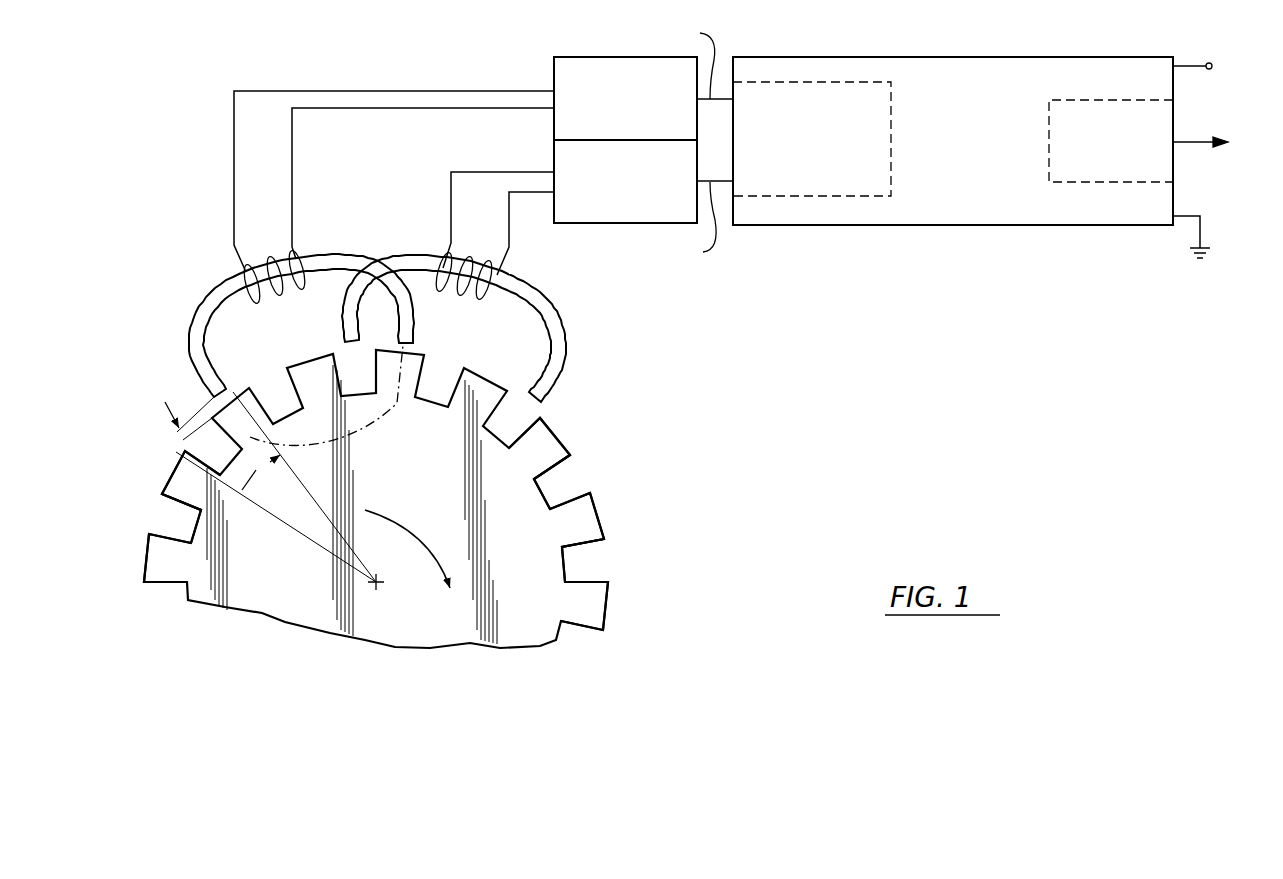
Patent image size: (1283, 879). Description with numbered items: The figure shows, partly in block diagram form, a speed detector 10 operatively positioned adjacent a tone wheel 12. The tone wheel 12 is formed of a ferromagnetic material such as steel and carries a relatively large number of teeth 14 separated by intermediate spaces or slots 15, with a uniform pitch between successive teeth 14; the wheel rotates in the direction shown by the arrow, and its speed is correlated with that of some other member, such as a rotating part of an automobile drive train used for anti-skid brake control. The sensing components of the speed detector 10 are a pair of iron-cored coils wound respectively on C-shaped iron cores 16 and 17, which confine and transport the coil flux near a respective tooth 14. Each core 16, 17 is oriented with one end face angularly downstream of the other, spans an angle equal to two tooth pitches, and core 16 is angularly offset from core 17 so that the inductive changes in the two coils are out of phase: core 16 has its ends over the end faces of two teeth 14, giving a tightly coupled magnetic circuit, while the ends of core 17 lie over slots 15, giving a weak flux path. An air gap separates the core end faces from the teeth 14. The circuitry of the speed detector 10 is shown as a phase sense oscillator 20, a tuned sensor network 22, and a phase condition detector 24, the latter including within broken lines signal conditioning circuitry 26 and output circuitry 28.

The speed detector 10 is at (895, 398).
The tone wheel 12 is at (275, 618).
The teeth 14 is at (176, 471).
The slots 15 is at (168, 517).
The iron core 16 is at (326, 262).
The iron core 17 is at (543, 303).
The phase sense oscillator 20 is at (600, 57).
The tuned sensor network 22 is at (590, 225).
The phase condition detector 24 is at (1040, 226).
The signal conditioning circuitry 26 is at (893, 100).
The output circuitry 28 is at (1092, 99).